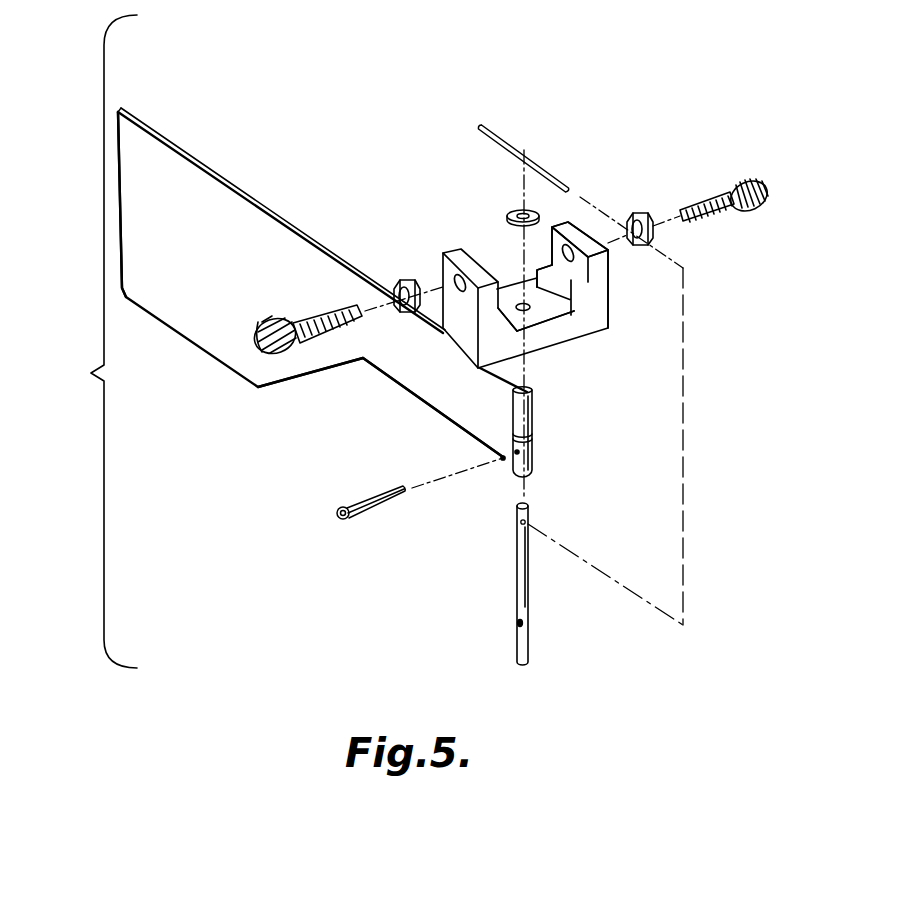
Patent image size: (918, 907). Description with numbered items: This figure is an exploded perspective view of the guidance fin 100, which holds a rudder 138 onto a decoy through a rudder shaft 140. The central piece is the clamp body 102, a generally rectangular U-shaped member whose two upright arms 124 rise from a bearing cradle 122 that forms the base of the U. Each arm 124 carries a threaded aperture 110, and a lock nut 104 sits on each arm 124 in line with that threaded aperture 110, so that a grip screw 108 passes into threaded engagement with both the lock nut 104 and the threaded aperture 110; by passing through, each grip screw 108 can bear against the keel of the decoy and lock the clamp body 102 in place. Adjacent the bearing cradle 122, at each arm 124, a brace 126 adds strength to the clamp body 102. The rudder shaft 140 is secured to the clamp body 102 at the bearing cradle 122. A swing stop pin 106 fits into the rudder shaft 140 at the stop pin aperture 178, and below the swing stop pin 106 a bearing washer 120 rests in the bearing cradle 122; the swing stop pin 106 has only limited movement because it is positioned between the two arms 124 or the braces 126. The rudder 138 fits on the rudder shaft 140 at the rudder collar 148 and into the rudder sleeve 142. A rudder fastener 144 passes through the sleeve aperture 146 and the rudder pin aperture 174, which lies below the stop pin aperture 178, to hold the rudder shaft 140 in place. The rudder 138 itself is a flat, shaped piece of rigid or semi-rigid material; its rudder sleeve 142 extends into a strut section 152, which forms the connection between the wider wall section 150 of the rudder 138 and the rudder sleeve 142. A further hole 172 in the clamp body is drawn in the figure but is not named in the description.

The guidance fin 100 is at (91, 341).
The clamp body 102 is at (420, 240).
The lock nut 104 is at (653, 237).
The swing stop pin 106 is at (525, 146).
The grip screw 108 is at (727, 190).
The threaded aperture 110 is at (578, 280).
The bearing washer 120 is at (520, 208).
The bearing cradle 122 is at (552, 335).
The arm 124 is at (575, 232).
The brace 126 is at (533, 320).
The rudder 138 is at (240, 172).
The rudder shaft 140 is at (517, 553).
The rudder sleeve 142 is at (535, 447).
The rudder fastener 144 is at (357, 520).
The sleeve aperture 146 is at (503, 458).
The rudder collar 148 is at (495, 382).
The wall section 150 is at (193, 318).
The strut section 152 is at (390, 395).
The pin hole 172 is at (521, 304).
The rudder pin aperture 174 is at (517, 623).
The stop pin aperture 178 is at (528, 522).